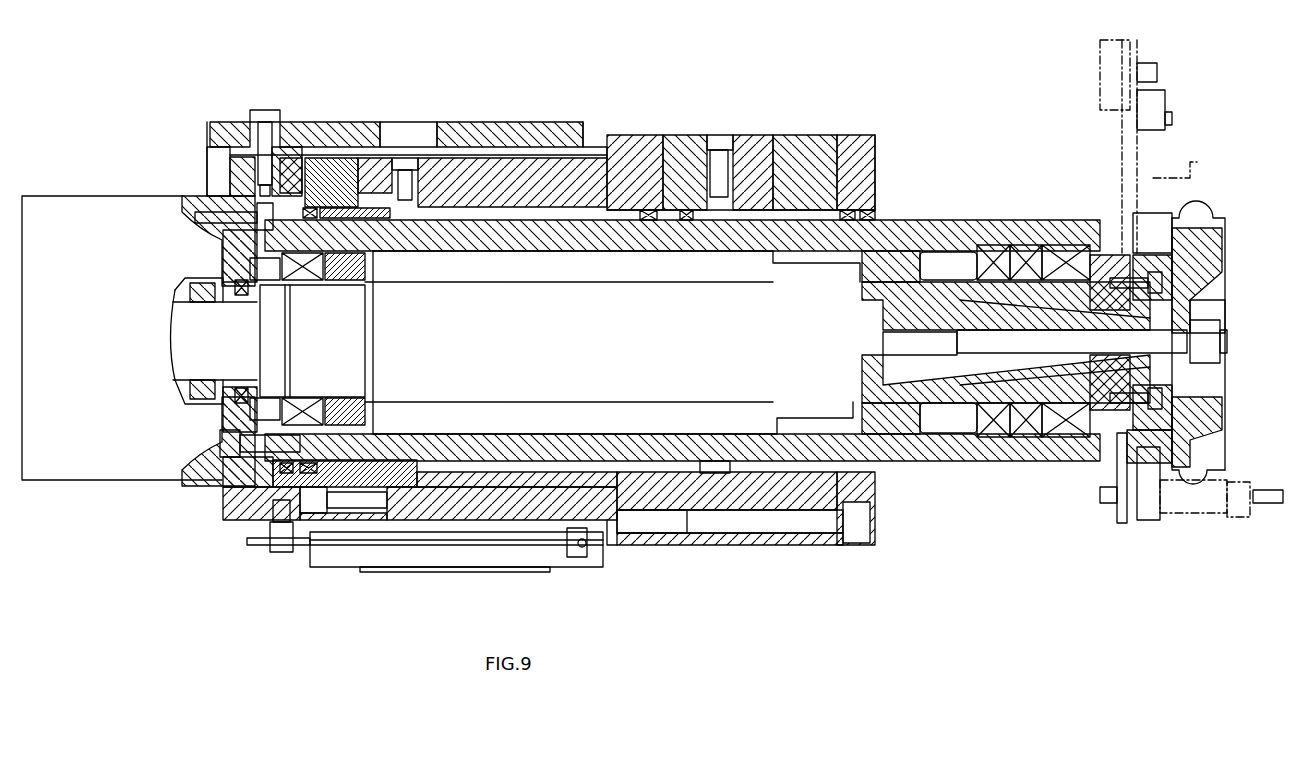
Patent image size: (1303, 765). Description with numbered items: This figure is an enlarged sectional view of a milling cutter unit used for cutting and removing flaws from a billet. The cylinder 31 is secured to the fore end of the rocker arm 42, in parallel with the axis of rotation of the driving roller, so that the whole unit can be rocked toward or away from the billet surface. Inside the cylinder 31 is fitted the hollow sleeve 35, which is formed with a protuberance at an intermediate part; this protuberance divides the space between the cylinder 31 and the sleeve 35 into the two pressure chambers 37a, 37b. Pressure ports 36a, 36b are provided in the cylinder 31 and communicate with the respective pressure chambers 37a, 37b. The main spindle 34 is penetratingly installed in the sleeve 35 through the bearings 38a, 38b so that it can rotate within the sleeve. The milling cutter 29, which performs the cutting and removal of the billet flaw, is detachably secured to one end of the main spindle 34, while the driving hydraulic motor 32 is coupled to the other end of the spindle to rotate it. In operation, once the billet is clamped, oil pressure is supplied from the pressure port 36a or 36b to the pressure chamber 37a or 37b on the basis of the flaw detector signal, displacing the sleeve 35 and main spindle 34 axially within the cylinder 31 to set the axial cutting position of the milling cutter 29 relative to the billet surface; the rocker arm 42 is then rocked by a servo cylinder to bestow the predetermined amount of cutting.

The milling cutter 29 is at (1200, 252).
The cylinder 31 is at (600, 140).
The driving hydraulic motor 32 is at (107, 452).
The main spindle 34 is at (938, 387).
The hollow sleeve 35 is at (927, 233).
The pressure port 36a is at (402, 195).
The pressure port 36b is at (717, 137).
The pressure chamber 37a is at (517, 200).
The pressure chamber 37b is at (778, 135).
The bearing 38a is at (225, 457).
The bearing 38b is at (1052, 253).
The rocker arm 42 is at (800, 132).